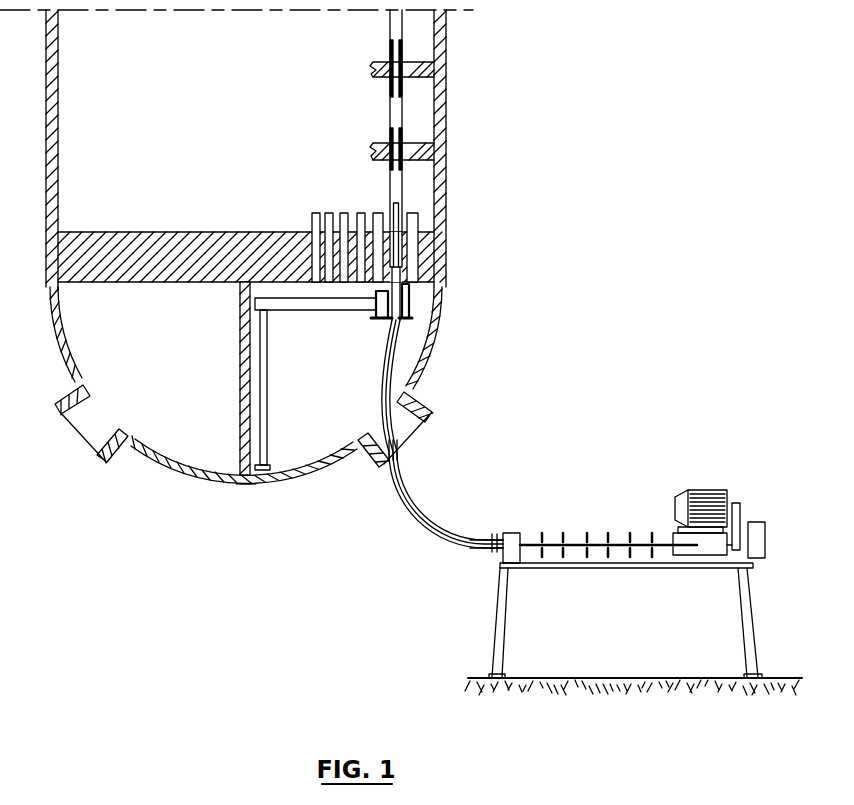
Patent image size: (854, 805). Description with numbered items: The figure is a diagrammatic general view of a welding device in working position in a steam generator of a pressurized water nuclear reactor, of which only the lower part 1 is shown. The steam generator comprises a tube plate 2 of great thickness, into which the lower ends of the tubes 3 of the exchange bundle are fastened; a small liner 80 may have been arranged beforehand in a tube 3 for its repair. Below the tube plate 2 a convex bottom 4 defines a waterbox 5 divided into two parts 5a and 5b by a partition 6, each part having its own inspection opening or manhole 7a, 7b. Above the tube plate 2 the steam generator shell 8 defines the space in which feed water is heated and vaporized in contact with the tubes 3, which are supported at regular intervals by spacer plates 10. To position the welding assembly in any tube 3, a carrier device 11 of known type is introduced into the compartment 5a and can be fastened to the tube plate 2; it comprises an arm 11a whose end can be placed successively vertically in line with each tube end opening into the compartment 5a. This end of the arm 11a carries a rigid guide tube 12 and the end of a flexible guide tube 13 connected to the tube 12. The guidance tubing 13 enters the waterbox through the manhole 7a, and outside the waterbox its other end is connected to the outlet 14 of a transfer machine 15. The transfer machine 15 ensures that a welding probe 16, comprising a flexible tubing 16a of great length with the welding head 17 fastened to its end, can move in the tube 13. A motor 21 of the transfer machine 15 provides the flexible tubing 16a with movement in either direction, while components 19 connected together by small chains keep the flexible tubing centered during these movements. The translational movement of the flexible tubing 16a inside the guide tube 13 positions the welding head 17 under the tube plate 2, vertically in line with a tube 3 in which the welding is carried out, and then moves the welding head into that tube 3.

The lower part of steam generator 1 is at (186, 484).
The tube plate 2 is at (95, 244).
The tubes 3 is at (343, 213).
The tank bottom 4 is at (240, 486).
The waterbox 5 is at (106, 353).
The waterbox part 5a is at (321, 391).
The waterbox part 5b is at (150, 385).
The partition 6 is at (240, 455).
The manhole 7a is at (378, 462).
The manhole 7b is at (104, 462).
The steam generator shell 8 is at (440, 124).
The spacer plates 10 is at (425, 66).
The carrier device 11 is at (268, 389).
The arm 11a is at (332, 306).
The rigid guide tube 12 is at (407, 304).
The flexible guide tube 13 is at (410, 502).
The outlet of transfer machine 14 is at (518, 568).
The transfer machine 15 is at (751, 643).
The welding probe 16 is at (399, 453).
The flexible tubing 16a is at (467, 532).
The welding head 17 is at (398, 256).
The centering components 19 is at (609, 533).
The motor 21 is at (711, 492).
The small liner 80 is at (388, 148).